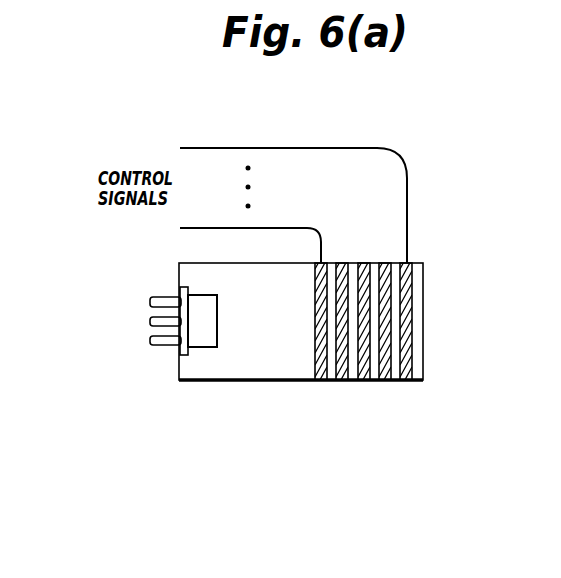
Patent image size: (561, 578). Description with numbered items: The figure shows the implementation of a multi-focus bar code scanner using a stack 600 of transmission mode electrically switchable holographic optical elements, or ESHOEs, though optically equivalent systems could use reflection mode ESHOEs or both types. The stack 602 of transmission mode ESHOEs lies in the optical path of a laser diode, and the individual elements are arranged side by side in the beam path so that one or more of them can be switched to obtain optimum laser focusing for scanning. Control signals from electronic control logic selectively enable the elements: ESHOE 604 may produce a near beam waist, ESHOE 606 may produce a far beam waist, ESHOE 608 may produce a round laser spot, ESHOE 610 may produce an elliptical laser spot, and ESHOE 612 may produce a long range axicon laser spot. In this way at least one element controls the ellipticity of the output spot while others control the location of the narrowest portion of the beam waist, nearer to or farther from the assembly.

The stack of transmission mode ESHOEs 600 is at (361, 267).
The stack of transmission mode ESHOEs 602 is at (178, 354).
The ESHOE 604 is at (321, 381).
The ESHOE 606 is at (342, 381).
The ESHOE 608 is at (363, 381).
The ESHOE 610 is at (385, 381).
The ESHOE 612 is at (406, 381).